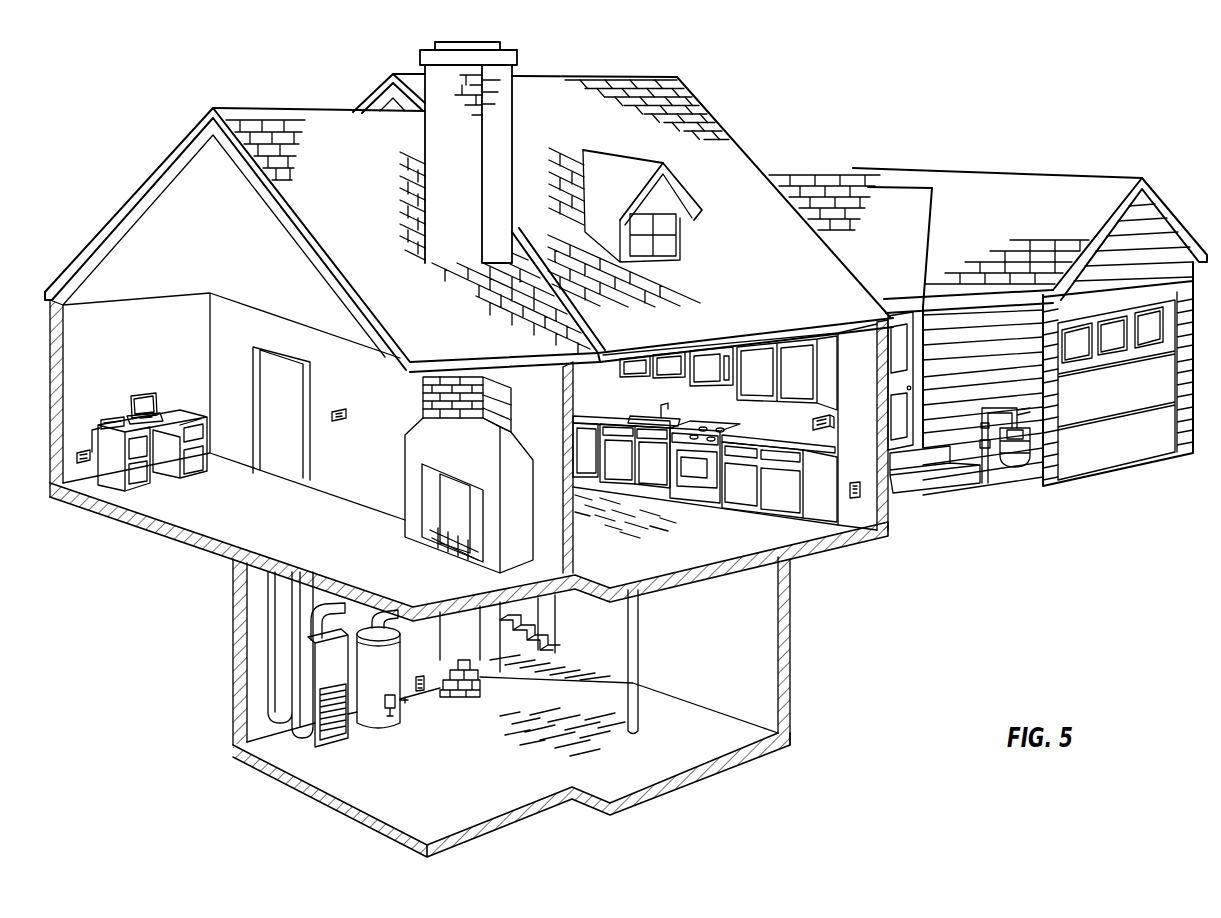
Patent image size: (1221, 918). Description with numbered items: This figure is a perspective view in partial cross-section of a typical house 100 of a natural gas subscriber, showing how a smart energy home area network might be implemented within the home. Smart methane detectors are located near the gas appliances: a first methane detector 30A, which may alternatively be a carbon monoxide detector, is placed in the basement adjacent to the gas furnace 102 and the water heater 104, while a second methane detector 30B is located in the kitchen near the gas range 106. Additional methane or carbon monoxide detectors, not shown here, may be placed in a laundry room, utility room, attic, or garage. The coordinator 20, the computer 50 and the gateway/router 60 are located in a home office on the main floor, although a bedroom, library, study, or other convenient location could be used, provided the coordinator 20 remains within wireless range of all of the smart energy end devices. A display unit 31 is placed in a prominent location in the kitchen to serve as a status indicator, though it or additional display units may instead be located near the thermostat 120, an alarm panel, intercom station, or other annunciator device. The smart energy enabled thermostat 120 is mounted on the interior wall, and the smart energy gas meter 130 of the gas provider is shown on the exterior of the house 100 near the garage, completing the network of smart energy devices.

The house 100 is at (894, 46).
The coordinator 20 is at (83, 463).
The gateway/router 60 is at (106, 419).
The computer 50 is at (141, 397).
The thermostat 120 is at (343, 411).
The display unit 31 is at (836, 422).
The second methane detector 30B is at (862, 493).
The smart energy gas meter 130 is at (1013, 467).
The gas range 106 is at (703, 500).
The first methane detector 30A is at (428, 691).
The water heater 104 is at (396, 718).
The gas furnace 102 is at (338, 740).